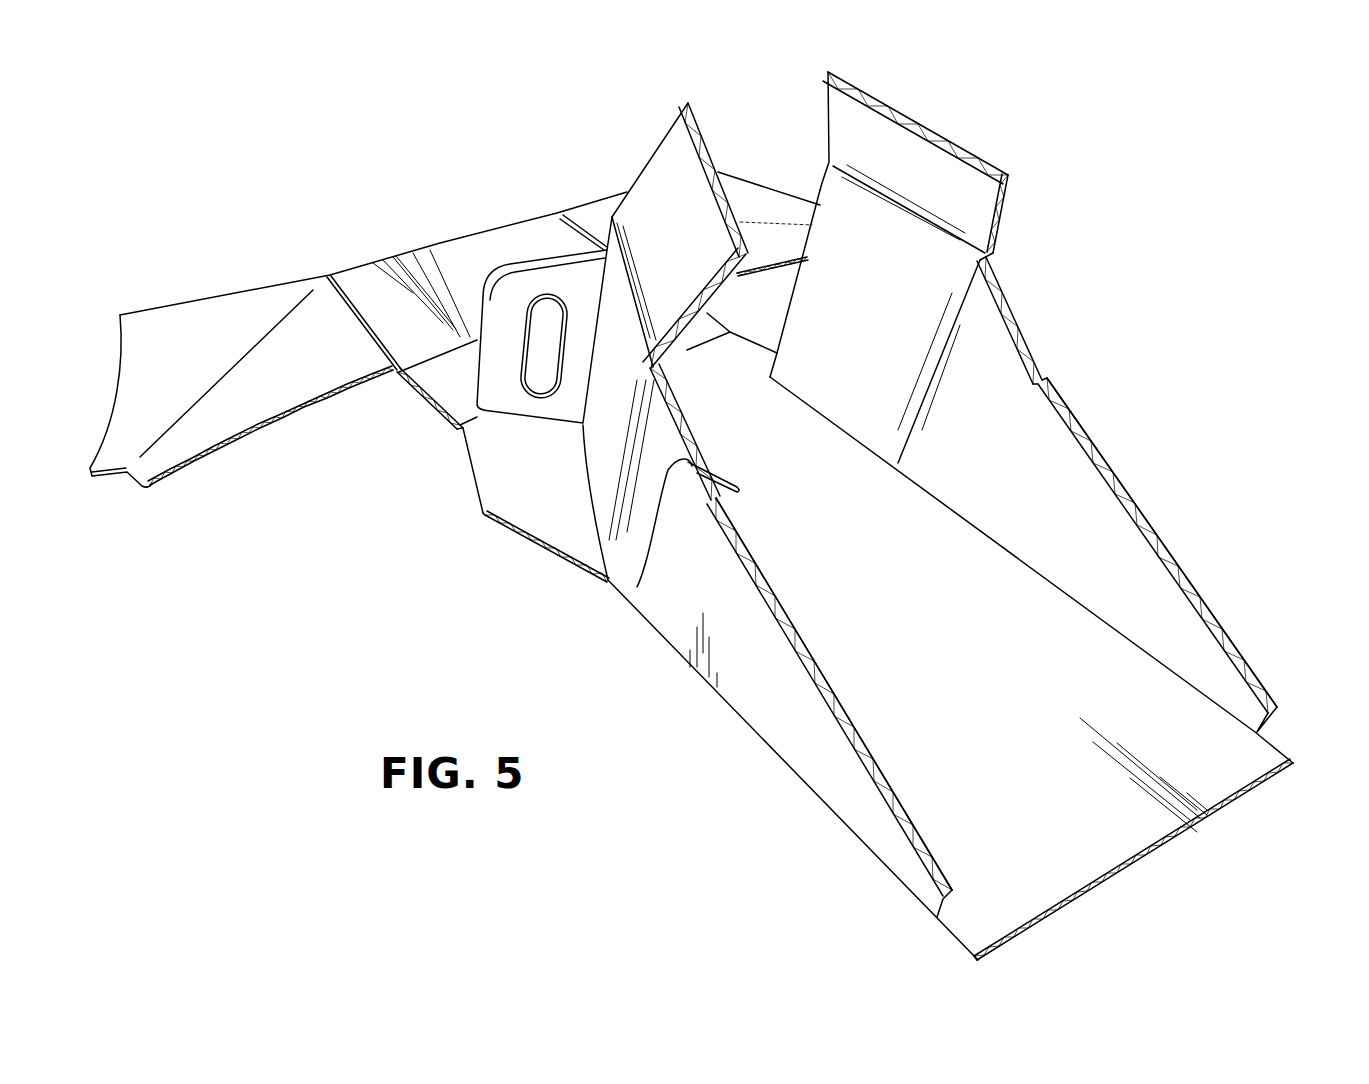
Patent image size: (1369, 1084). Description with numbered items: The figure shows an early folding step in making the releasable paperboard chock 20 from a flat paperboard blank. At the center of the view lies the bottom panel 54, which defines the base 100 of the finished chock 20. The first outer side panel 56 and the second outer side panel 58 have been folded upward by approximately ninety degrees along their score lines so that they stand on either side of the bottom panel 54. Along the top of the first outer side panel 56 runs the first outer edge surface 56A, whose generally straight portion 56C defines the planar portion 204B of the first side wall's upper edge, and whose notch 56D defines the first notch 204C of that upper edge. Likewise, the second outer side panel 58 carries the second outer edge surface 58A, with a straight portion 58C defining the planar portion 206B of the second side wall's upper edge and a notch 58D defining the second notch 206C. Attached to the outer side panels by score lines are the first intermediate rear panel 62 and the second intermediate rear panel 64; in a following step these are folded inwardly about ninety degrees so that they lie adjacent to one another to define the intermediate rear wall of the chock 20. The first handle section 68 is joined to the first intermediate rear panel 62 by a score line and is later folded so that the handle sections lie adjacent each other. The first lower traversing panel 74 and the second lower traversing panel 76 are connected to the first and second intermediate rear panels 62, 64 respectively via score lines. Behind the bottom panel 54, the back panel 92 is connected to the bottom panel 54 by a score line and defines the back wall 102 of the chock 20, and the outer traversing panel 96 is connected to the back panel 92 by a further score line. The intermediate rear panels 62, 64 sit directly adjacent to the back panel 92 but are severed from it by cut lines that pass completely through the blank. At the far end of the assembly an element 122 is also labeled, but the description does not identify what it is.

The paperboard chock 20 is at (1200, 517).
The bottom panel 54 is at (1044, 668).
The first outer side panel 56 is at (744, 709).
The first outer edge surface 56A is at (868, 782).
The straight portion 56C is at (744, 770).
The straight portion of first upper edge surface 204B is at (637, 587).
The notch 56D is at (649, 581).
The first notch 204C is at (692, 466).
The second outer side panel 58 is at (1128, 491).
The second outer edge surface 58A is at (1228, 642).
The straight portion 58C is at (1080, 317).
The straight portion of second upper edge surface 206B is at (1010, 307).
The notch 58D is at (1095, 346).
The second notch 206C is at (1043, 379).
The first intermediate rear panel 62 is at (659, 452).
The second intermediate rear panel 64 is at (875, 326).
The first handle section 68 is at (542, 336).
The first lower traversing panel 74 is at (658, 177).
The second lower traversing panel 76 is at (897, 143).
The back panel 92 is at (538, 528).
The outer traversing panel 96 is at (447, 383).
The base 100 is at (1137, 833).
The back wall 102 is at (495, 470).
The mounting flange 122 is at (410, 267).